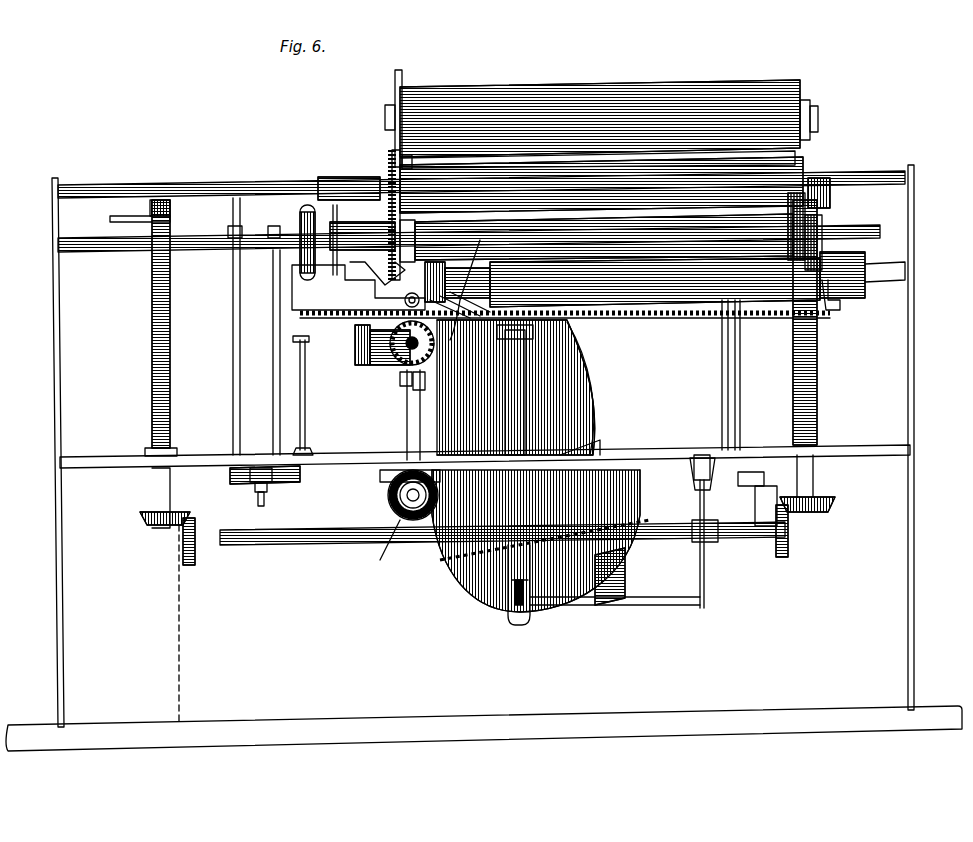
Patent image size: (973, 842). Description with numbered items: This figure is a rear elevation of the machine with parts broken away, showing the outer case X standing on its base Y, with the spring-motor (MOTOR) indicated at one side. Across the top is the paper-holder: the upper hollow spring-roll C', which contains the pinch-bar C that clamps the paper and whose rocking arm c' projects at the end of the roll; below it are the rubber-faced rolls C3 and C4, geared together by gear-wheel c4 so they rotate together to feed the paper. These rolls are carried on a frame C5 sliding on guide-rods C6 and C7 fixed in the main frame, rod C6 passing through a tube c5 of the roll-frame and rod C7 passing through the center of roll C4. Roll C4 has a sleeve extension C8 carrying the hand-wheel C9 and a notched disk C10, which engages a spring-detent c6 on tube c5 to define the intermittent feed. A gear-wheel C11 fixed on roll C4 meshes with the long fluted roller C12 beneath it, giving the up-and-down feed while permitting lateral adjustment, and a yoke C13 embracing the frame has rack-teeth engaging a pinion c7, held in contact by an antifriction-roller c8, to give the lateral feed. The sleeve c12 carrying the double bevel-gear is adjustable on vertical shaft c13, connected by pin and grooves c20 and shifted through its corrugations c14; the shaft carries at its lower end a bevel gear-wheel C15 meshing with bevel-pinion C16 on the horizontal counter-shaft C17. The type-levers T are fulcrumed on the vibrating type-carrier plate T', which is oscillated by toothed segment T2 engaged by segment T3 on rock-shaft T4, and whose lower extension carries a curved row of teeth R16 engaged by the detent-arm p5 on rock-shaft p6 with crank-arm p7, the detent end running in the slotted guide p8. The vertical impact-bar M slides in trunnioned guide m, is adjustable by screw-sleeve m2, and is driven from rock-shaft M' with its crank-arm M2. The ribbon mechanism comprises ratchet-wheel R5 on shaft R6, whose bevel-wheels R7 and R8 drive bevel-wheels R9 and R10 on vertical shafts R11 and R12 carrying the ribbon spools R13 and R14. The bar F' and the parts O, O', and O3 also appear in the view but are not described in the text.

The pinch-bar C is at (587, 65).
The upper hollow roll C' is at (600, 118).
The rocking arm c' is at (402, 100).
The rubber-faced roll C3 is at (415, 168).
The tube c5 is at (617, 182).
The carrying-frame C5 is at (392, 150).
The rubber-faced roll C4 is at (470, 248).
The guide-rod C6 is at (244, 190).
The spring-detent c6 is at (336, 205).
The guide-rod C7 is at (212, 248).
The pinion c7 is at (412, 343).
The sleeve extension C8 is at (362, 236).
The antifriction-roller c8 is at (358, 358).
The hand-wheel C9 is at (308, 205).
The notched disk C10 is at (346, 284).
The gear-wheel C11 is at (792, 262).
The fluted roller C12 is at (868, 262).
The yoke C13 is at (832, 310).
The gear-wheel c4 is at (370, 343).
The sleeve c12 is at (400, 380).
The vertical shaft c13 is at (408, 430).
The corrugations c14 is at (308, 440).
The pin and grooves c20 is at (412, 392).
The bevel gear-wheel C15 is at (399, 490).
The bevel-pinion C16 is at (405, 518).
The counter-shaft C17 is at (392, 508).
The type-levers T is at (358, 283).
The type-carrier T' is at (538, 390).
The toothed segment T2 is at (580, 444).
The toothed segment T3 is at (628, 560).
The rock-shaft T4 is at (480, 588).
The trunnioned guide m is at (560, 322).
The impact-bar M is at (516, 387).
The screw-sleeve m2 is at (596, 388).
The rock-shaft M' is at (284, 491).
The crank-arm M2 is at (262, 506).
The collar O is at (254, 221).
The post O' is at (486, 326).
The post O3 is at (272, 300).
The frame bar F' is at (485, 452).
The ratchet-wheel R5 is at (711, 500).
The horizontal shaft R6 is at (312, 545).
The bevel-wheel R7 is at (195, 566).
The bevel-wheel R8 is at (784, 556).
The bevel-wheel R9 is at (150, 526).
The bevel-wheel R10 is at (832, 500).
The vertical shaft R11 is at (147, 364).
The vertical shaft R12 is at (821, 348).
The spool R13 is at (118, 210).
The spool R14 is at (832, 196).
The curved row of teeth R16 is at (450, 572).
The detent-arm p5 is at (518, 625).
The rock-shaft p6 is at (652, 605).
The crank-arm p7 is at (706, 585).
The detent-guide p8 is at (530, 616).
The outer case X is at (888, 614).
The base Y is at (425, 722).
The spring-motor MOTOR is at (135, 623).